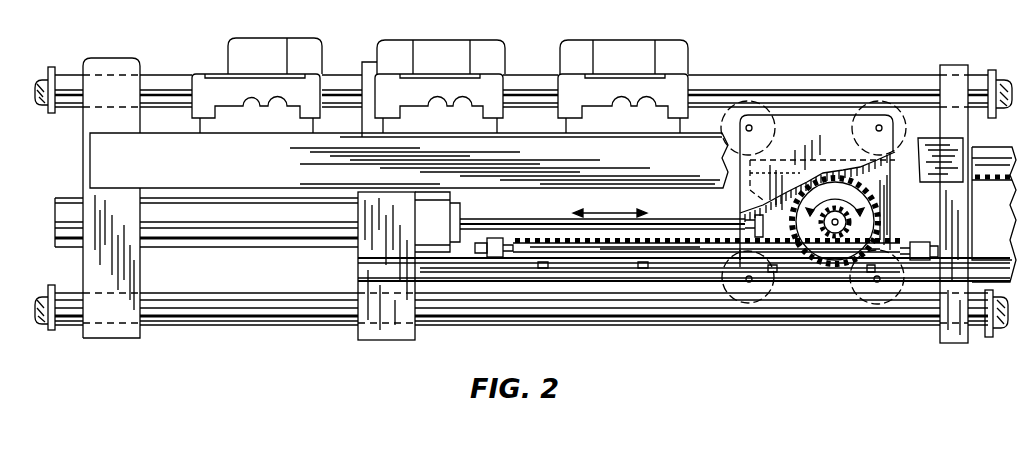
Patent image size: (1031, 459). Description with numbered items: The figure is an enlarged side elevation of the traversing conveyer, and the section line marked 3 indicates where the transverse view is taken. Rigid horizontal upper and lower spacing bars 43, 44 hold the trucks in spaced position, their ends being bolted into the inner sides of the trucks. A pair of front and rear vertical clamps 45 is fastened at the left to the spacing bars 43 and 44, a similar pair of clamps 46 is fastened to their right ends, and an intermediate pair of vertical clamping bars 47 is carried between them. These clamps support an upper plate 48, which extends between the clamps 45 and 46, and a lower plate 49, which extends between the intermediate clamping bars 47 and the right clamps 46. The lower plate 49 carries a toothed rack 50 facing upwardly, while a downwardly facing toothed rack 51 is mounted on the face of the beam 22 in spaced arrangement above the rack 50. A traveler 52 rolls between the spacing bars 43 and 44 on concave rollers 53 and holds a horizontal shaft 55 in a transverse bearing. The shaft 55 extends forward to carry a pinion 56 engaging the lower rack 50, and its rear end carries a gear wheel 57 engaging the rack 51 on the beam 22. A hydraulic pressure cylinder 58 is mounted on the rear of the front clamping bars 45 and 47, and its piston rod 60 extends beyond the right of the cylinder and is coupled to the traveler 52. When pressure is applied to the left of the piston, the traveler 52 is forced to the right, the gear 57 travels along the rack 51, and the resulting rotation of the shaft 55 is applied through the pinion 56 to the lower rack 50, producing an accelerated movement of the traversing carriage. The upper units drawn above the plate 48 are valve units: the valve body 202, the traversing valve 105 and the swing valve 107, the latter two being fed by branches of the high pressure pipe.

The upper spacing bar 43 is at (168, 83).
The valve body 202 is at (240, 83).
The traversing valve 105 is at (418, 83).
The swing valve 107 is at (602, 82).
The upper plate 48 is at (150, 174).
The vertical clamps 45 is at (108, 332).
The intermediate clamping bars 47 is at (380, 330).
The vertical clamps 46 is at (955, 343).
The hydraulic pressure cylinder 58 is at (247, 228).
The piston rod 60 is at (520, 223).
The lower plate 49 is at (607, 272).
The toothed rack 50 is at (685, 250).
The concave rollers 53 is at (732, 129).
The traveler 52 is at (822, 141).
The toothed rack 51 is at (893, 176).
The gear wheel 57 is at (876, 222).
The pinion 56 is at (821, 227).
The horizontal shaft 55 is at (706, 249).
The beam 22 is at (986, 150).
The lower spacing bar 44 is at (843, 320).
The section line 3- 3 is at (908, 50).